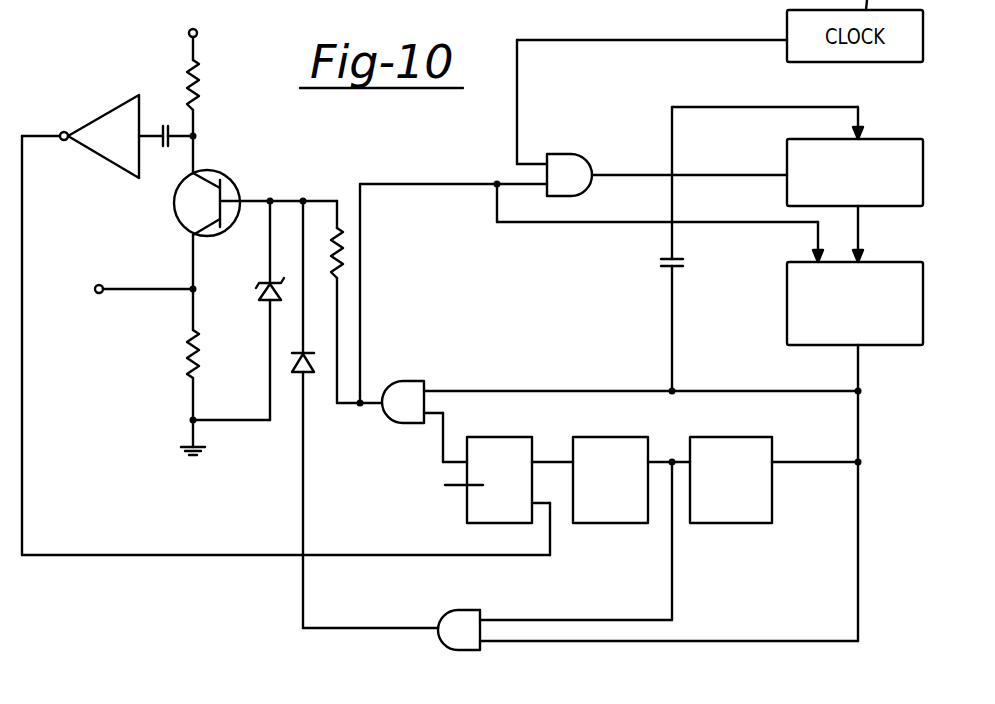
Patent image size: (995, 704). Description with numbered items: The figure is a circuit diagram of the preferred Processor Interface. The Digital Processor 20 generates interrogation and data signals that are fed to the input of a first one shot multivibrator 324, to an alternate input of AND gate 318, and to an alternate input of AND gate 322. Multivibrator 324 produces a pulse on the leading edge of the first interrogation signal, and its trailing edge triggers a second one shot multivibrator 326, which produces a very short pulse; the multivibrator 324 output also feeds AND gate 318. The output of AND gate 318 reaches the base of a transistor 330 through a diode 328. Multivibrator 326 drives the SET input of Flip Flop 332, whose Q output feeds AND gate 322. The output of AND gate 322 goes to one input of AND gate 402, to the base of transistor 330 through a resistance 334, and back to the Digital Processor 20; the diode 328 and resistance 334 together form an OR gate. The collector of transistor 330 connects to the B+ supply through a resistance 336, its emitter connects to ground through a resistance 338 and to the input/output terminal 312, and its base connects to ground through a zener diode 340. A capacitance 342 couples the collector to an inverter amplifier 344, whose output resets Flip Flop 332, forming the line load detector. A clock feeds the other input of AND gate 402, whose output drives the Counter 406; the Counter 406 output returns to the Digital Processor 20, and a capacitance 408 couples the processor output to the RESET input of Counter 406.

The Digital Processor 20 is at (787, 300).
The input/output terminal 312 is at (100, 284).
The AND gate 318 is at (466, 652).
The AND gate 322 is at (401, 380).
The first one shot multivibrator 324 is at (753, 525).
The second one shot multivibrator 326 is at (633, 525).
The diode 328 is at (297, 378).
The transistor 330 is at (228, 178).
The Flip Flop 332 is at (466, 510).
The resistance 334 is at (342, 236).
The resistance 336 is at (205, 92).
The resistance 338 is at (190, 352).
The zener diode 340 is at (270, 302).
The capacitance 342 is at (164, 124).
The inverter amplifier 344 is at (88, 122).
The AND gate 402 is at (563, 153).
The Counter 406 is at (886, 138).
The capacitance 408 is at (665, 266).